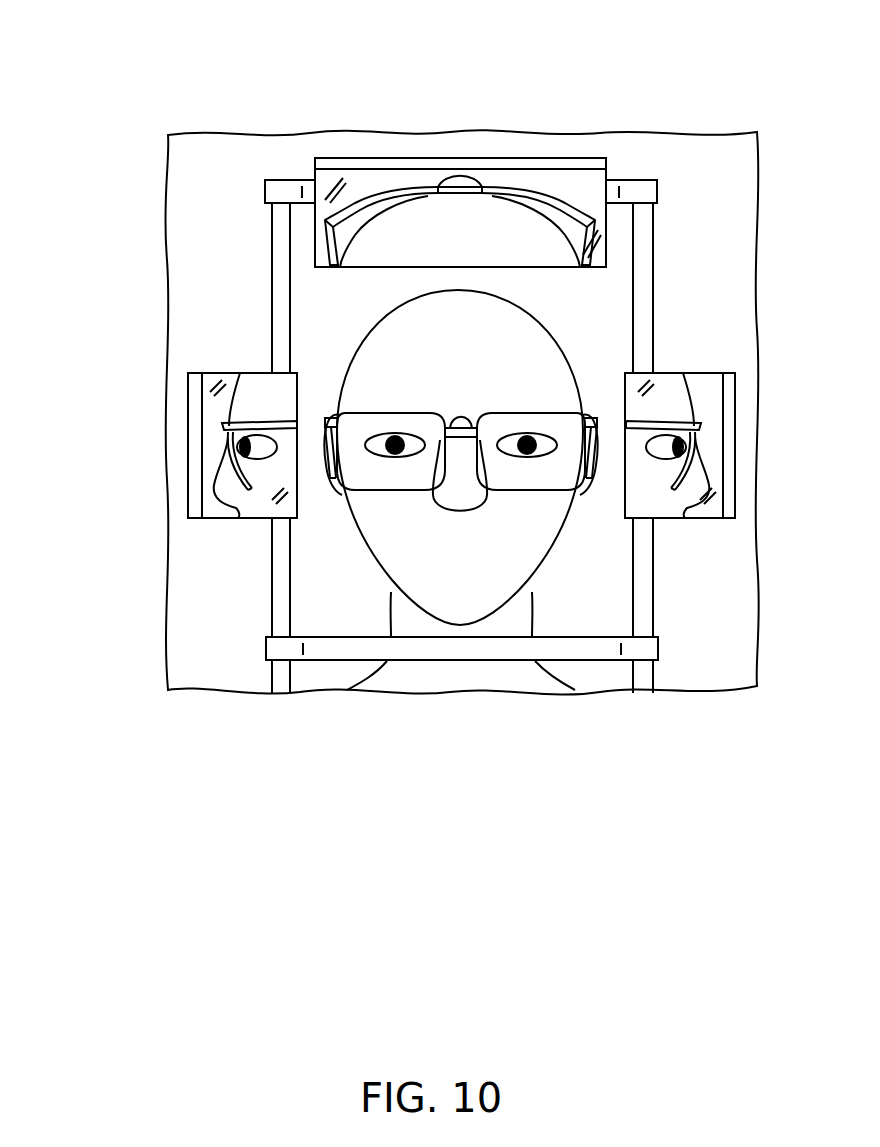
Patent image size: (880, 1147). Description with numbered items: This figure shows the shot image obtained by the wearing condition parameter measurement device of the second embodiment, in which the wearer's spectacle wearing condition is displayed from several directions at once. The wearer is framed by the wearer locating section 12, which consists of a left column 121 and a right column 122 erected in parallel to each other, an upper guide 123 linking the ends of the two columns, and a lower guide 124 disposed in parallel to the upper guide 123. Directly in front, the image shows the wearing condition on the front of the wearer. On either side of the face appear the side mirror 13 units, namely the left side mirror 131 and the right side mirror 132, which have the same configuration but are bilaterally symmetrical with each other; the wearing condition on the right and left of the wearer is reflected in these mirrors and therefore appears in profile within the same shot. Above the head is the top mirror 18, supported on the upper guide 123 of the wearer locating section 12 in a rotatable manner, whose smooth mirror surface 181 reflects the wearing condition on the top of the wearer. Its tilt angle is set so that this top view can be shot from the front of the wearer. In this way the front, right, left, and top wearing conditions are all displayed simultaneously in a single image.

The wearer locating section 12 is at (385, 95).
The top mirror 18 is at (465, 158).
The mirror surface 181 is at (582, 187).
The upper guide 123 is at (638, 180).
The left column 121 is at (270, 560).
The right column 122 is at (653, 550).
The lower guide 124 is at (612, 637).
The side mirror 13 is at (459, 445).
The left side mirror 131 is at (188, 393).
The right side mirror 132 is at (735, 390).